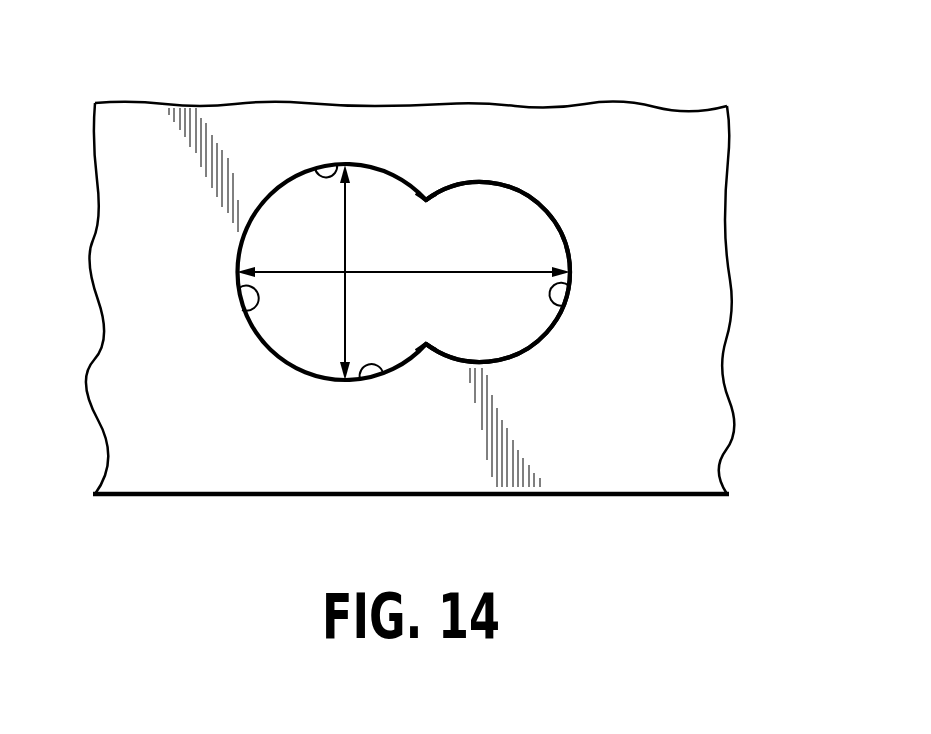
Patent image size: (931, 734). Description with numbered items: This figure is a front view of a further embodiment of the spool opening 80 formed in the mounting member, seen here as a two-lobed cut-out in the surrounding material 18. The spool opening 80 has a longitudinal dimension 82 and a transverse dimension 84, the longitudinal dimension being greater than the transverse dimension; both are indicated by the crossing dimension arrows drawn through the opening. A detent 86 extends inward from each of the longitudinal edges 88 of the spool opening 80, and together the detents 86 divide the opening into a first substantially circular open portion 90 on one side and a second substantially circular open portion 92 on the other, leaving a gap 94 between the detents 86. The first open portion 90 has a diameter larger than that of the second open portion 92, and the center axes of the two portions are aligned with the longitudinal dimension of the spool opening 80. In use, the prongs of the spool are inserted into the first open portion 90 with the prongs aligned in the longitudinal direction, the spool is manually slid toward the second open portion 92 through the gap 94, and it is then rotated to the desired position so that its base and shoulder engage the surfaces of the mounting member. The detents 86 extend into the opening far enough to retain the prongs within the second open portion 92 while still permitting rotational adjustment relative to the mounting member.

The plate 18 is at (190, 104).
The spool opening 80 is at (290, 170).
The longitudinal dimension 82 is at (387, 268).
The transverse dimension 84 is at (347, 203).
The detent 86 is at (426, 200).
The longitudinal edges 88 is at (316, 167).
The first substantially circular open portion 90 is at (241, 290).
The second substantially circular open portion 92 is at (568, 305).
The gap 94 is at (462, 234).